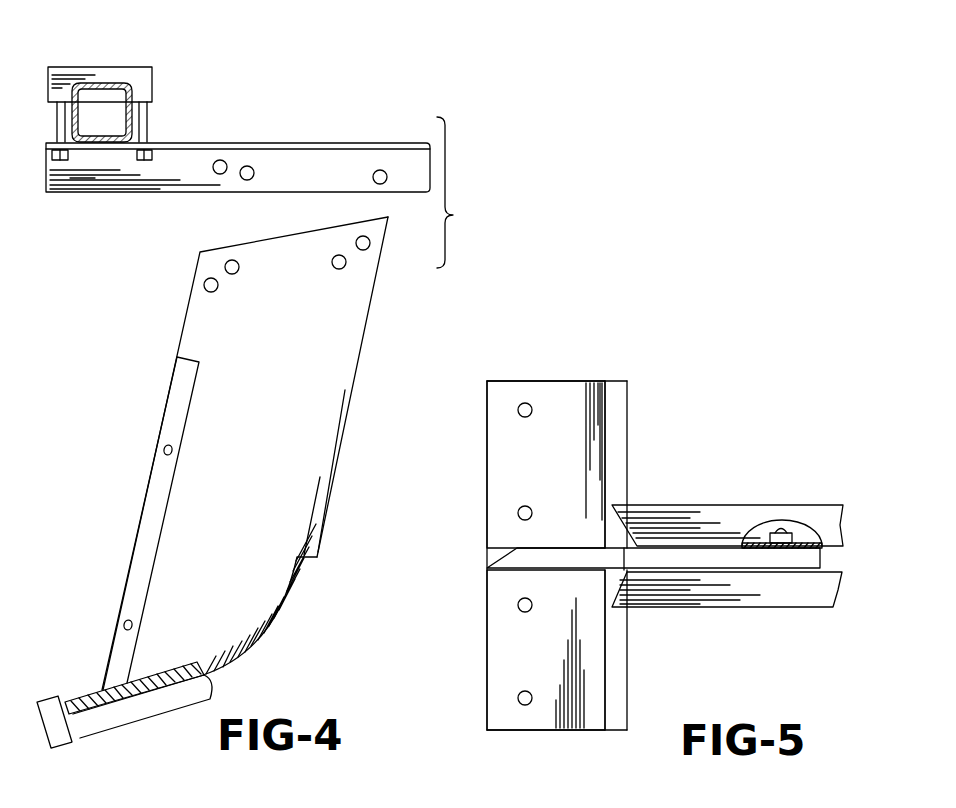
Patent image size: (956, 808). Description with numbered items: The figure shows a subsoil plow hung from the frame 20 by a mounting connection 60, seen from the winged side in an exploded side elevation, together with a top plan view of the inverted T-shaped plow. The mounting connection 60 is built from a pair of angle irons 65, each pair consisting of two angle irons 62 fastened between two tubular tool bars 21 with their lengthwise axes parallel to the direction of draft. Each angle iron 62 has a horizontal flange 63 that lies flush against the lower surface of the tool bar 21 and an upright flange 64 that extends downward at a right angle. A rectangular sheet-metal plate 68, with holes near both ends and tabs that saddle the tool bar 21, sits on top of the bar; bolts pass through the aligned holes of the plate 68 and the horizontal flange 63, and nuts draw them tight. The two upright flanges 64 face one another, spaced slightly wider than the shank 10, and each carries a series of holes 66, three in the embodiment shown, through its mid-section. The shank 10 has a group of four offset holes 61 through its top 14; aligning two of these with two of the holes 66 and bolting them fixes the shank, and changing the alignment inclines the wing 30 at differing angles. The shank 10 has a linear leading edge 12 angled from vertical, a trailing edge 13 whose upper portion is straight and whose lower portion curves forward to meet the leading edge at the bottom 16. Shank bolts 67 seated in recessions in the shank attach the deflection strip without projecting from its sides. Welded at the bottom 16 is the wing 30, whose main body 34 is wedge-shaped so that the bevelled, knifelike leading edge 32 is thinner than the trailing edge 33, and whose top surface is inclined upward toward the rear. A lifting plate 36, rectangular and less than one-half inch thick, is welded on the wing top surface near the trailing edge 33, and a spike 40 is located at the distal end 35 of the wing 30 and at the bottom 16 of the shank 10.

In FIG. 5, the shank 10 is at (763, 555).
In FIG. 4, the leading edge 12 is at (148, 495).
In FIG. 4, the trailing edge 13 is at (367, 327).
In FIG. 4, the top 14 is at (302, 303).
In FIG. 4, the bottom 16 is at (177, 650).
In FIG. 4, the frame 20 is at (205, 113).
In FIG. 4, the tool bar 21 is at (145, 120).
In FIG. 4, the wing 30 is at (147, 693).
In FIG. 5, the wing 30 is at (552, 483).
In FIG. 5, the leading edge 32 is at (487, 485).
In FIG. 5, the trailing edge 33 is at (627, 453).
In FIG. 5, the main body 34 is at (597, 650).
In FIG. 5, the distal end 35 is at (557, 381).
In FIG. 5, the lifting plate 36 is at (617, 410).
In FIG. 4, the spike 40 is at (75, 723).
In FIG. 4, the mounting connection 60 is at (500, 210).
In FIG. 4, the offset holes 61 is at (216, 264).
In FIG. 4, the angle iron 62 is at (342, 162).
In FIG. 4, the horizontal flange 63 is at (265, 142).
In FIG. 5, the horizontal flange 63 is at (718, 522).
In FIG. 4, the upright flange 64 is at (190, 180).
In FIG. 5, the upright flange 64 is at (807, 540).
In FIG. 5, the pair of angle irons 65 is at (848, 563).
In FIG. 4, the series of holes 66 is at (420, 176).
In FIG. 5, the shank bolt 67 is at (778, 536).
In FIG. 4, the metal plate 68 is at (148, 78).